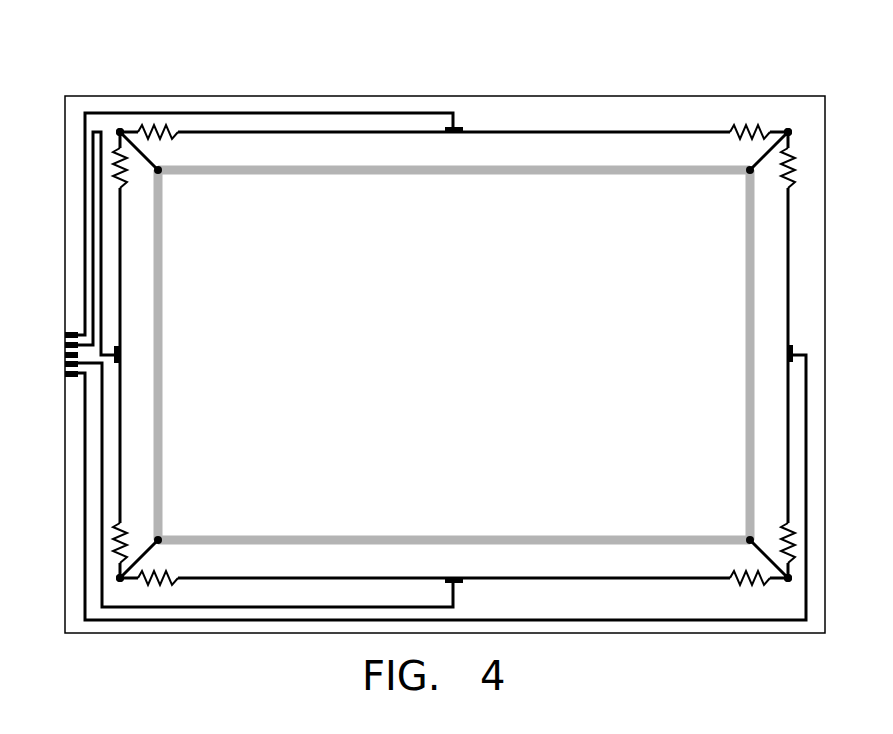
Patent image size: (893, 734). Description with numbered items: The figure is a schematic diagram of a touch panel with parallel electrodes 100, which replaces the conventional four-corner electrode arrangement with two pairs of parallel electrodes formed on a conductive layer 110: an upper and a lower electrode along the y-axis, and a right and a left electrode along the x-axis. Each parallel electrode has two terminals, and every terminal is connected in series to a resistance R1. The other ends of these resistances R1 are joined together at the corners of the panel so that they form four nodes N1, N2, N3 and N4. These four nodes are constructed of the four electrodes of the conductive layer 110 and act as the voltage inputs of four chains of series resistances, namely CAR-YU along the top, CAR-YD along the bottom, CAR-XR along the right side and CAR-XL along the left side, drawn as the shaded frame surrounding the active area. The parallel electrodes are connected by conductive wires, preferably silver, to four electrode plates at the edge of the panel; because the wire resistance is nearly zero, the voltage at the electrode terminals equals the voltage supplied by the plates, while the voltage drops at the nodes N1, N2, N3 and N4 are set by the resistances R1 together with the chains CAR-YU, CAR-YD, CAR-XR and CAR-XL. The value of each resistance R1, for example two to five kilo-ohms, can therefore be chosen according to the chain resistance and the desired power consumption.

The touch panel with parallel electrodes 100 is at (429, 323).
The conductive layer 110 is at (420, 96).
The resistance R1 is at (468, 354).
The node N1 is at (113, 126).
The node N2 is at (800, 121).
The node N3 is at (787, 589).
The node N4 is at (119, 589).
The chain of series resistances CAR-YU is at (455, 172).
The chain of series resistances CAR-XL is at (160, 317).
The chain of series resistances CAR-XR is at (750, 330).
The chain of series resistances CAR-YD is at (485, 537).